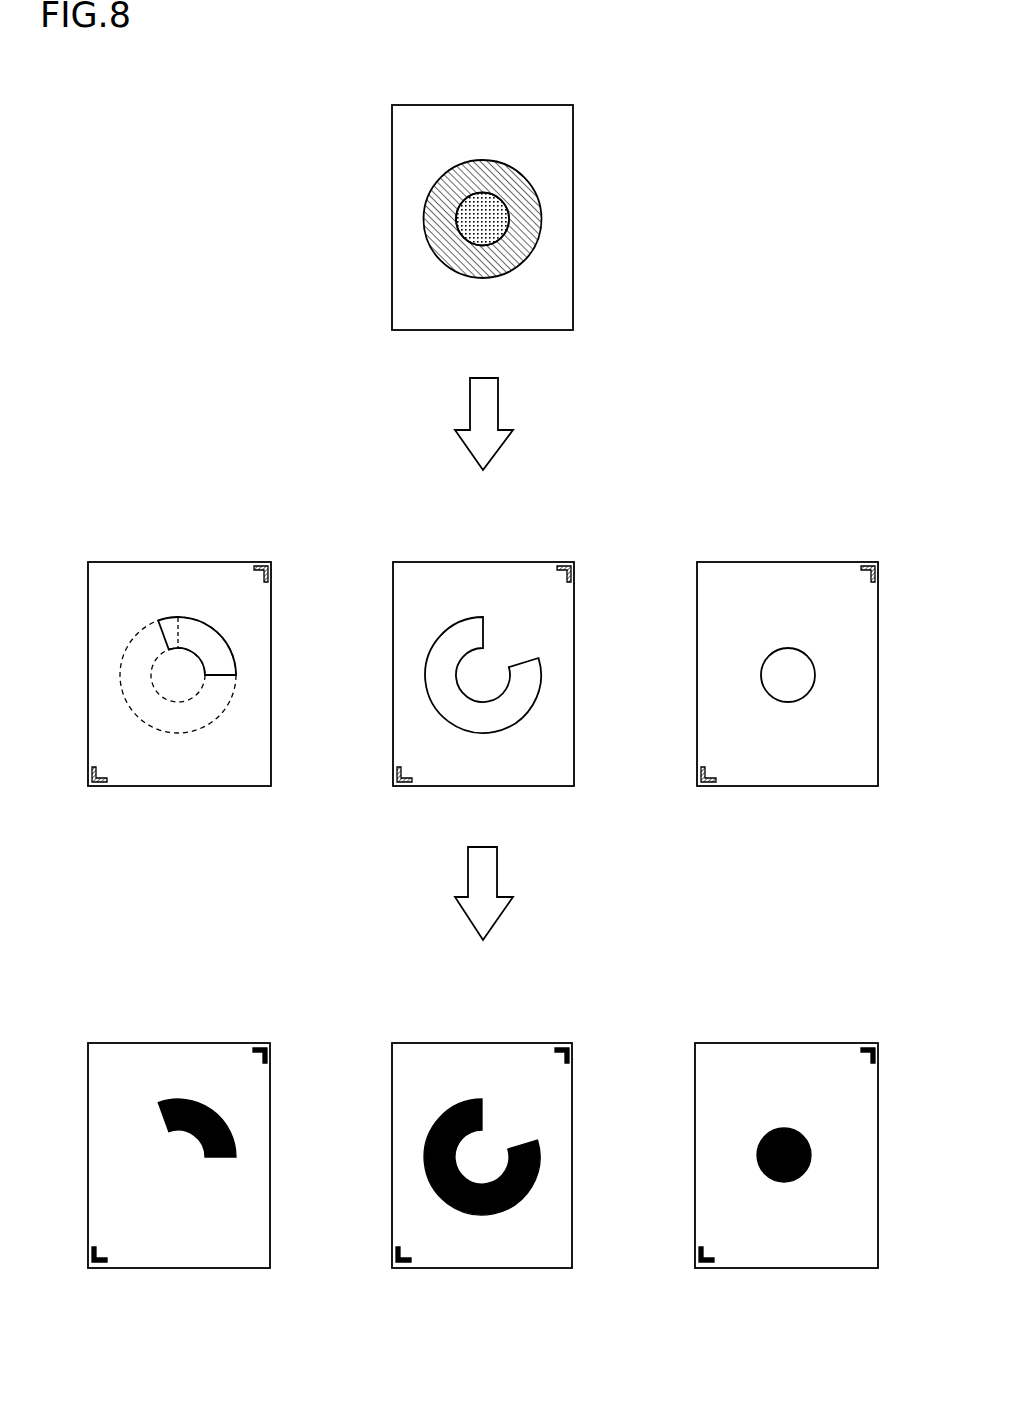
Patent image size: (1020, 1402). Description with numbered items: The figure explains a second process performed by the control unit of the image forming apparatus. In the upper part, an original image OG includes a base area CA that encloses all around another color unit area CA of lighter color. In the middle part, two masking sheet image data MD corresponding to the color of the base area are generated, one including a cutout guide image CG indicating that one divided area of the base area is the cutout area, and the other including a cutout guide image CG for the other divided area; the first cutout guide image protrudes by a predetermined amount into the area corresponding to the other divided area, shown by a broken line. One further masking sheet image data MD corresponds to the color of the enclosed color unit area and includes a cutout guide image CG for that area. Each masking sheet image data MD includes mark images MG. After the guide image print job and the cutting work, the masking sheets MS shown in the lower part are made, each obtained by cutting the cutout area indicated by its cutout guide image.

The original image OG is at (418, 148).
The color unit area CA is at (423, 219).
The masking sheet image data MD is at (727, 561).
The mark image MG is at (270, 575).
The cutout guide image CG is at (240, 661).
The masking sheet MS is at (727, 1042).